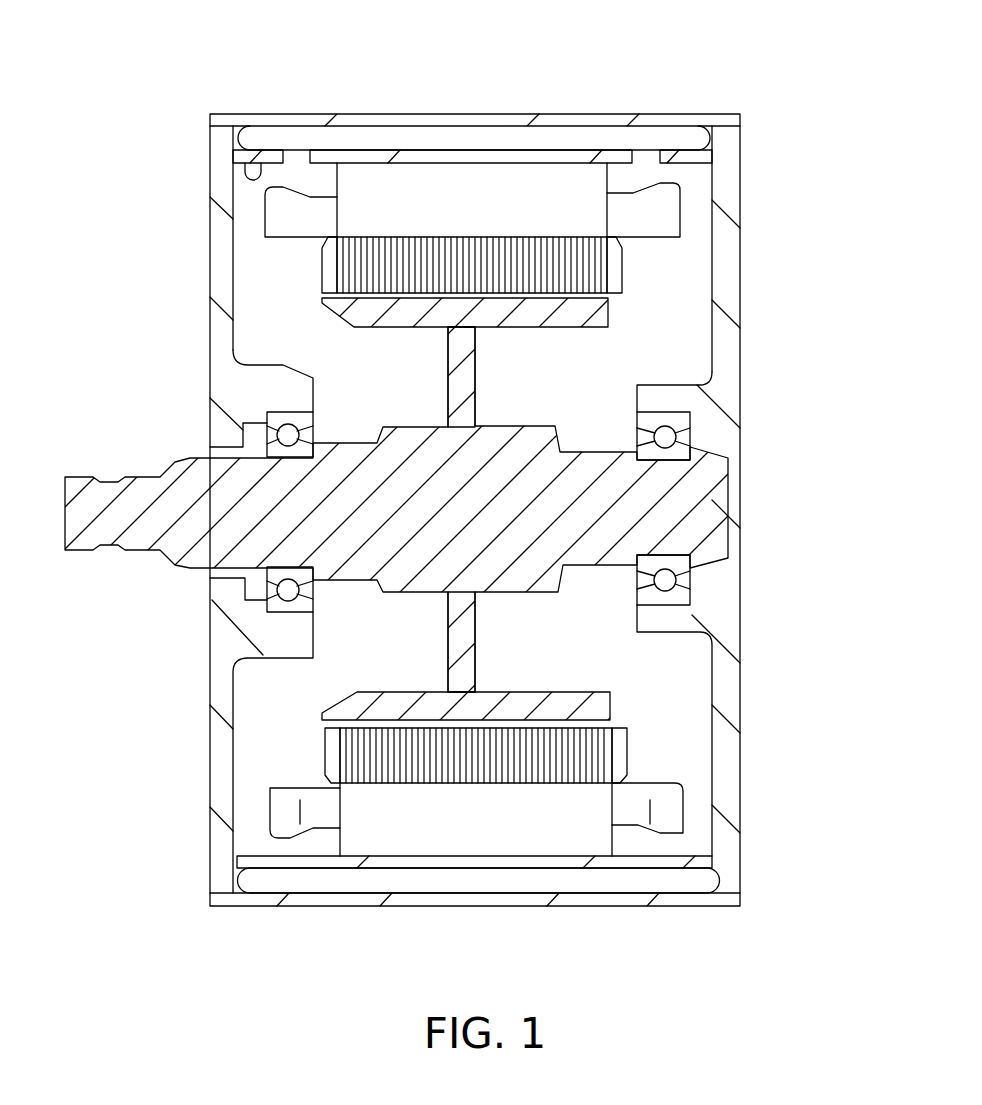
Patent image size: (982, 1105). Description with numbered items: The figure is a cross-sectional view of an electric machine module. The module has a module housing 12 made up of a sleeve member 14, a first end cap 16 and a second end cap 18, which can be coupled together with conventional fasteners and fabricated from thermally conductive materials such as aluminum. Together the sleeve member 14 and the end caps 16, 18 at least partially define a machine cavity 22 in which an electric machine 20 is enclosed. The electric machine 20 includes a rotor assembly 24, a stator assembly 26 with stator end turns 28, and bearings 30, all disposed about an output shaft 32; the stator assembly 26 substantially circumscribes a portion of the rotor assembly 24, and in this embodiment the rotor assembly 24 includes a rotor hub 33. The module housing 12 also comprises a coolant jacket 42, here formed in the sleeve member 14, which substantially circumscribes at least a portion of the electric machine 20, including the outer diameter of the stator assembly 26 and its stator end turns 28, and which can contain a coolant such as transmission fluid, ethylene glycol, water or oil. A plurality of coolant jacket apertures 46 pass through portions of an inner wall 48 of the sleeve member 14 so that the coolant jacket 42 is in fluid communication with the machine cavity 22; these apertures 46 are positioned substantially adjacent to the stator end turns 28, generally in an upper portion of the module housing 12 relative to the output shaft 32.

The module housing 12 is at (718, 112).
The sleeve member 14 is at (401, 113).
The first end cap 16 is at (740, 188).
The second end cap 18 is at (208, 170).
The electric machine 20 is at (636, 310).
The machine cavity 22 is at (250, 265).
The rotor assembly 24 is at (634, 266).
The stator assembly 26 is at (702, 834).
The stator end turns 28 is at (276, 818).
The bearings 30 is at (291, 435).
The output shaft 32 is at (100, 538).
The rotor hub 33 is at (460, 387).
The coolant jacket 42 is at (487, 140).
The coolant jacket apertures 46 is at (645, 150).
The inner wall 48 is at (270, 168).